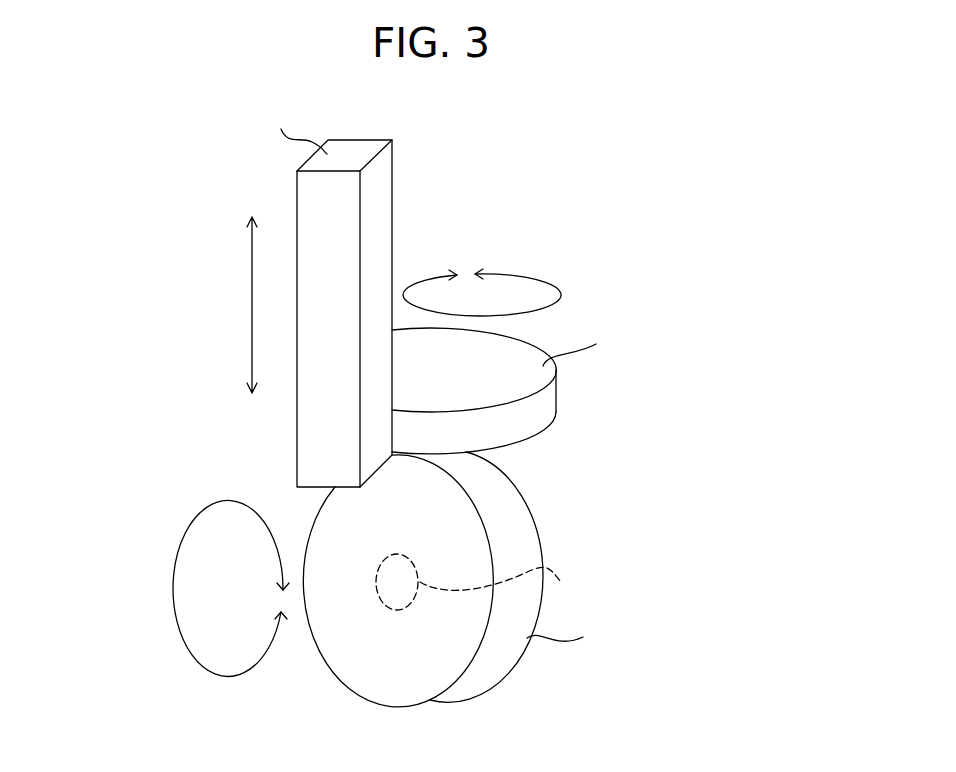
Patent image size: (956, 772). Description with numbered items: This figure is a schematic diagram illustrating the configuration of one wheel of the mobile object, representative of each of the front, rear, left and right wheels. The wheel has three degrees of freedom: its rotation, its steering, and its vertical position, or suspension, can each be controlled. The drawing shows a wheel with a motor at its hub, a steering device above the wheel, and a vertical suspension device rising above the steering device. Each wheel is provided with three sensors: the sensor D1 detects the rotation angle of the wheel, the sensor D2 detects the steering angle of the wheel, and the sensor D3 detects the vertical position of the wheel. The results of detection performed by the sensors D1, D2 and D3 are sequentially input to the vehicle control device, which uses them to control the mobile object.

The sensor D1 is at (560, 542).
The sensor D2 is at (577, 393).
The sensor D3 is at (415, 195).